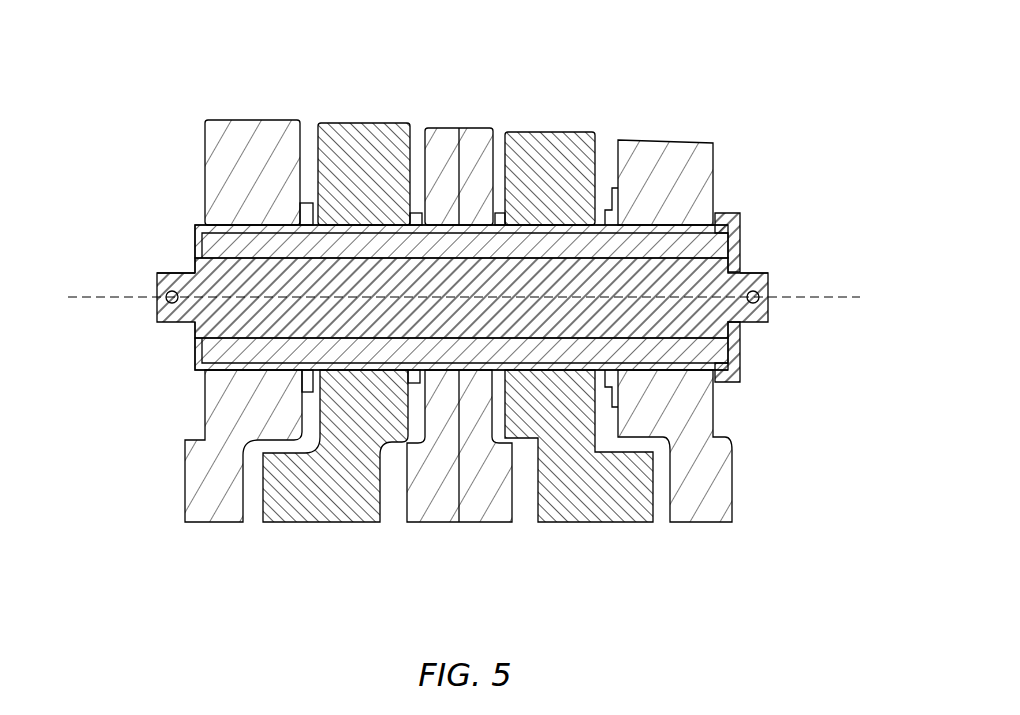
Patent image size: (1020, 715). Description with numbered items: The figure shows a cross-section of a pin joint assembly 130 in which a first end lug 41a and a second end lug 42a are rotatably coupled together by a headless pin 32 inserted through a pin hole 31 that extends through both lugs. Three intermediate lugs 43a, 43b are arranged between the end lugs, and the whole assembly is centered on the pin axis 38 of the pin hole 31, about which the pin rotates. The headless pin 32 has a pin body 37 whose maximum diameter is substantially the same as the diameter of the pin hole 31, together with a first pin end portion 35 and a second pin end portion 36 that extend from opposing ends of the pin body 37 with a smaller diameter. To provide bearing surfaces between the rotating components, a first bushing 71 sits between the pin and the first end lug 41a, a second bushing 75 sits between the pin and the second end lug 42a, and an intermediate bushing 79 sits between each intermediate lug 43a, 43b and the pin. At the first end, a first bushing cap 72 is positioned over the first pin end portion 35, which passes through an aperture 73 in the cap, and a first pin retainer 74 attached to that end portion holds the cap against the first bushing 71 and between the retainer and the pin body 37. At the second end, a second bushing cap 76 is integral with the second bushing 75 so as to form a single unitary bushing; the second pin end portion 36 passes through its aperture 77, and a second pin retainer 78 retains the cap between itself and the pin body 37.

The pin joint assembly 130 is at (752, 544).
The pin hole 31 is at (620, 222).
The headless pin 32 is at (252, 277).
The first pin end portion 35 is at (768, 273).
The second pin end portion 36 is at (160, 275).
The pin body 37 is at (664, 282).
The pin axis 38 is at (818, 295).
The first end lug 41a is at (695, 523).
The second end lug 42a is at (218, 498).
The intermediate lug 43a is at (443, 503).
The intermediate lug 43b is at (368, 157).
The first bushing 71 is at (667, 224).
The first bushing cap 72 is at (734, 346).
The aperture 73 is at (734, 266).
The first pin retainer 74 is at (762, 308).
The second bushing 75 is at (278, 224).
The second bushing cap 76 is at (195, 342).
The aperture 77 is at (195, 271).
The second pin retainer 78 is at (168, 301).
The intermediate bushing 79 is at (388, 224).